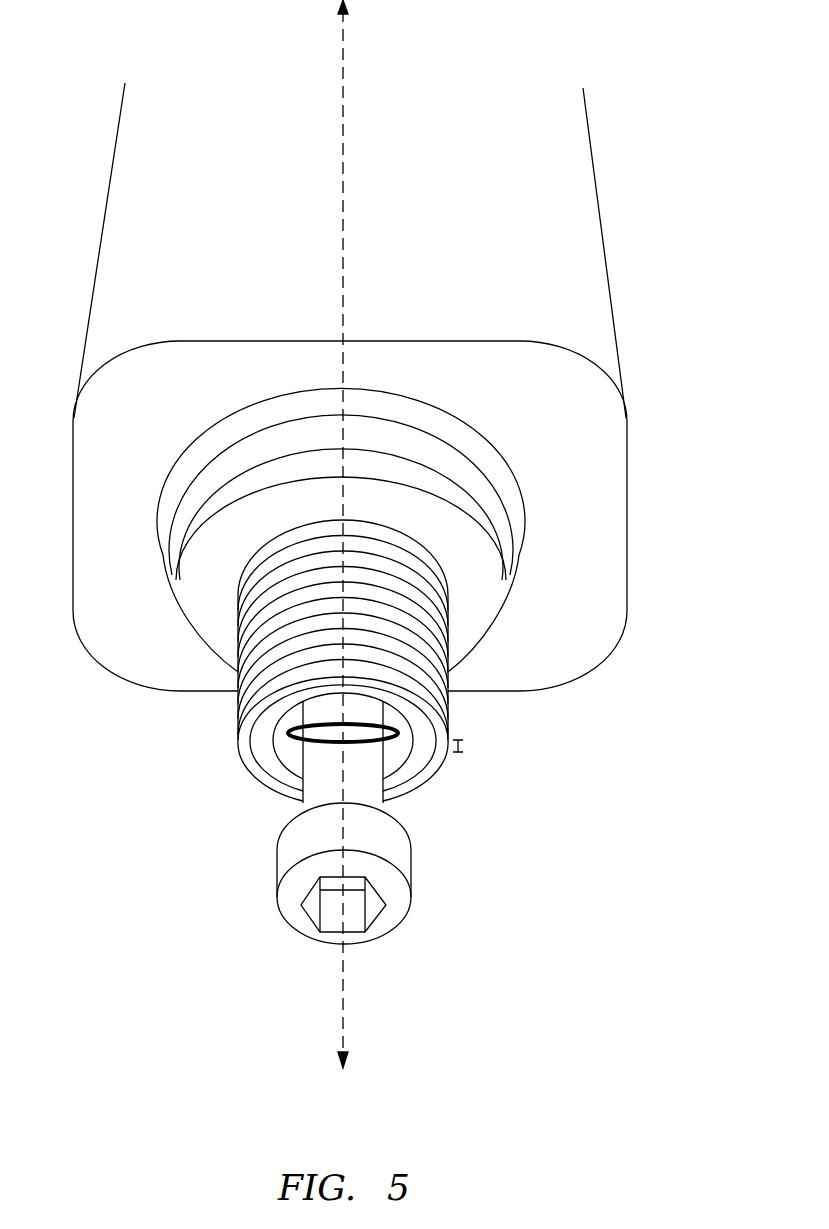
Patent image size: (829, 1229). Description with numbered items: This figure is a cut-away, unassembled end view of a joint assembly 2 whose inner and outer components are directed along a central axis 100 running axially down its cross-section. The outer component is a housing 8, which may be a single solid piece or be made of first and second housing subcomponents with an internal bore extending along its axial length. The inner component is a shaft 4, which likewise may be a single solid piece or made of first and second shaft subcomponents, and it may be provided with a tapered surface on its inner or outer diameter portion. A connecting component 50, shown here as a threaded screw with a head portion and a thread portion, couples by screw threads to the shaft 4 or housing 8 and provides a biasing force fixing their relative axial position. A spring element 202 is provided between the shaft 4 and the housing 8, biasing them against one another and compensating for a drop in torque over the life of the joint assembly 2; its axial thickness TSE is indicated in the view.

The joint assembly 2 is at (682, 67).
The housing 8 is at (524, 509).
The shaft 4 is at (450, 715).
The axial thickness TSE is at (463, 748).
The spring element 202 is at (290, 737).
The connecting component 50 is at (411, 862).
The central axis 100 is at (344, 58).